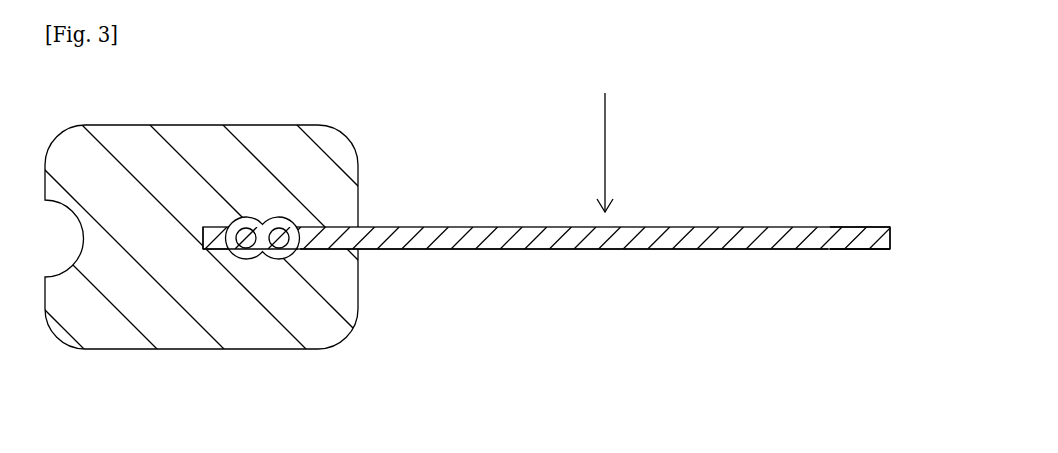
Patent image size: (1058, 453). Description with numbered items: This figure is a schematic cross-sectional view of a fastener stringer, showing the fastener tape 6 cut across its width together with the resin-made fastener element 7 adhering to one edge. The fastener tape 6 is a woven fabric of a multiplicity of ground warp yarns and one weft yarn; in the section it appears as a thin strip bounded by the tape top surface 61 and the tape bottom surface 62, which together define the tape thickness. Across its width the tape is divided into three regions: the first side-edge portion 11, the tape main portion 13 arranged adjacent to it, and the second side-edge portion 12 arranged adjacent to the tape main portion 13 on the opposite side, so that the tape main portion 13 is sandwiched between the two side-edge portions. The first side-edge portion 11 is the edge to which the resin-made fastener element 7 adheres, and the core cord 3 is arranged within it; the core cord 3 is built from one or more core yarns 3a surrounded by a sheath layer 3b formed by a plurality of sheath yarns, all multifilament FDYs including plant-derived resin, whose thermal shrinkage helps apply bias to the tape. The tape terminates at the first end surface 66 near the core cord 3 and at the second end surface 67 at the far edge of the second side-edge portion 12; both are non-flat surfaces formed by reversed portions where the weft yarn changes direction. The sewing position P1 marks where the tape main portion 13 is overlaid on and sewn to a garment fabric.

The core cord 3 is at (228, 212).
The core yarn 3a is at (278, 240).
The sheath layer 3b is at (246, 240).
The fastener tape 6 is at (492, 198).
The resin-made fastener element 7 is at (358, 160).
The first side-edge portion 11 is at (198, 267).
The second side-edge portion 12 is at (892, 267).
The tape main portion 13 is at (298, 292).
The tape top surface 61 is at (850, 227).
The tape bottom surface 62 is at (865, 251).
The first end surface 66 is at (203, 236).
The second end surface 67 is at (891, 234).
The sewing position P1 is at (607, 133).